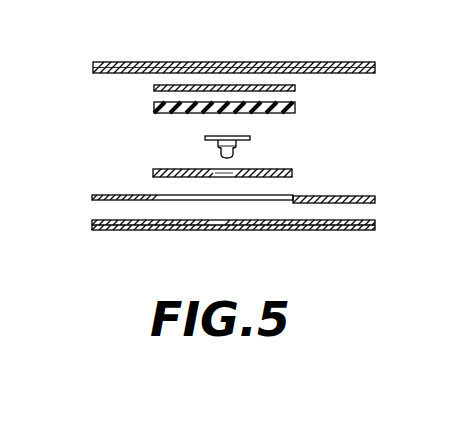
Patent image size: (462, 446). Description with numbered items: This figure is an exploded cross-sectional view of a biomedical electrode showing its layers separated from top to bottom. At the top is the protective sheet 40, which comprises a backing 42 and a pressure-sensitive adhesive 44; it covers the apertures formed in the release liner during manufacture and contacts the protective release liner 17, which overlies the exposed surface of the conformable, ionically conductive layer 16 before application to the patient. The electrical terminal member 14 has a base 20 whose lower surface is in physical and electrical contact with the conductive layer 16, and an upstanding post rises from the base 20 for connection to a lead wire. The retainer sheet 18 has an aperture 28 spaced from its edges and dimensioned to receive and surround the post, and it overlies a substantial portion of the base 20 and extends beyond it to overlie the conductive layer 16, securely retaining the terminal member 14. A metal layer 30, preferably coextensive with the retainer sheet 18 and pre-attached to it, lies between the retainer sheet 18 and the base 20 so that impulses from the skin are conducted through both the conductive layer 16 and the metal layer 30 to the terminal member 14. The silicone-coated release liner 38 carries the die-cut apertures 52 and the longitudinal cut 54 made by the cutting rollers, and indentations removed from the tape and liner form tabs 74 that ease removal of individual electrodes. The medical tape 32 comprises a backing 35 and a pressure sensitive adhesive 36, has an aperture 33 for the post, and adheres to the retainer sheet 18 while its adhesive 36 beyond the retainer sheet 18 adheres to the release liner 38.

The protective sheet 40 is at (128, 58).
The backing 42 is at (162, 63).
The pressure-sensitive adhesive 44 is at (373, 74).
The protective release liner 17 is at (155, 87).
The ionically conductive layer 16 is at (295, 110).
The electrical terminal member 14 is at (212, 152).
The base 20 is at (250, 138).
The retainer sheet 18 is at (153, 173).
The aperture 28 is at (238, 171).
The metal layer 30 is at (287, 171).
The release liner 38 is at (92, 197).
The apertures 52 is at (291, 198).
The longitudinal cut 54 is at (345, 198).
The tabs 74 is at (373, 197).
The pressure sensitive adhesive 36 is at (92, 220).
The medical tape 32 is at (207, 244).
The aperture 33 is at (221, 231).
The backing 35 is at (97, 229).